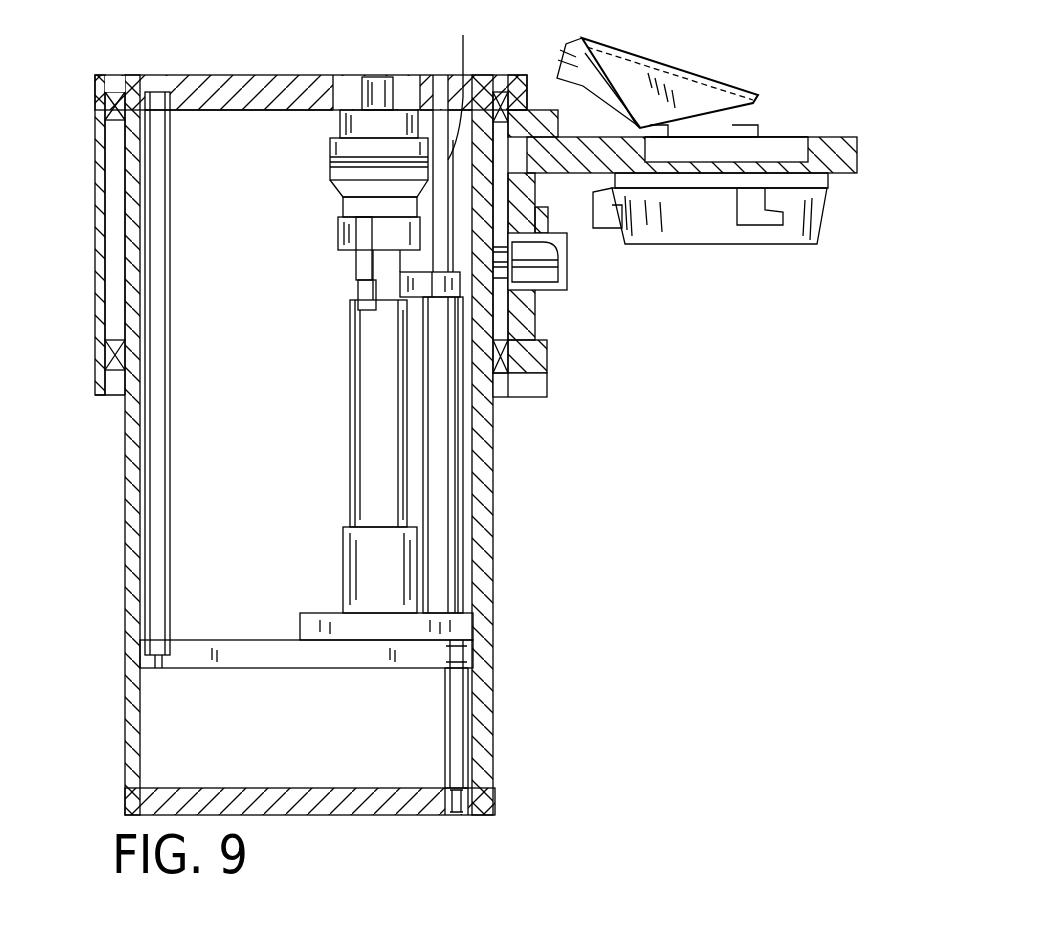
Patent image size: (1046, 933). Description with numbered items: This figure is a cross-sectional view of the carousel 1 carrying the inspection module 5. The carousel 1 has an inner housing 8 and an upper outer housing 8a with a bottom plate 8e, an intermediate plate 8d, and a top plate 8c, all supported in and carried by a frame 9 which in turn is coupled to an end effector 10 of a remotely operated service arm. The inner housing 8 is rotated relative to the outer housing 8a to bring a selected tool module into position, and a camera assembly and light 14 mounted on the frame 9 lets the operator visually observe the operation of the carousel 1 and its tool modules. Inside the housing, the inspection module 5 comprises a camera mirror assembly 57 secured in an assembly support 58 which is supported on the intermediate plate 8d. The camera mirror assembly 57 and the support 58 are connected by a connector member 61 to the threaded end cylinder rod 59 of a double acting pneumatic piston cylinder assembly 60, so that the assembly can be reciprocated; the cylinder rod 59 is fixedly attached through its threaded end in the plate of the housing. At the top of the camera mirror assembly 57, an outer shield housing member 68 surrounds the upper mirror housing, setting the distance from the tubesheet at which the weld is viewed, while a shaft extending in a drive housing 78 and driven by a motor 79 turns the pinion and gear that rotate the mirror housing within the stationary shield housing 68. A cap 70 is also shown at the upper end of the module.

The carousel 1 is at (518, 674).
The inspection module 5 is at (322, 403).
The inner housing 8 is at (487, 750).
The upper outer housing 8a is at (100, 270).
The top plate 8c is at (270, 80).
The intermediate plate 8d is at (258, 655).
The bottom plate 8e is at (340, 812).
The frame 9 is at (823, 137).
The end effector 10 is at (827, 212).
The camera assembly and light 14 is at (673, 67).
The camera mirror assembly 57 is at (366, 438).
The assembly support 58 is at (358, 561).
The threaded end cylinder rod 59 is at (470, 149).
The double acting pneumatic piston cylinder assembly 60 is at (445, 590).
The connector member 61 is at (400, 286).
The outer shield housing member 68 is at (340, 123).
The coupling 70 is at (336, 189).
The drive housing 78 is at (355, 262).
The motor 79 is at (352, 312).